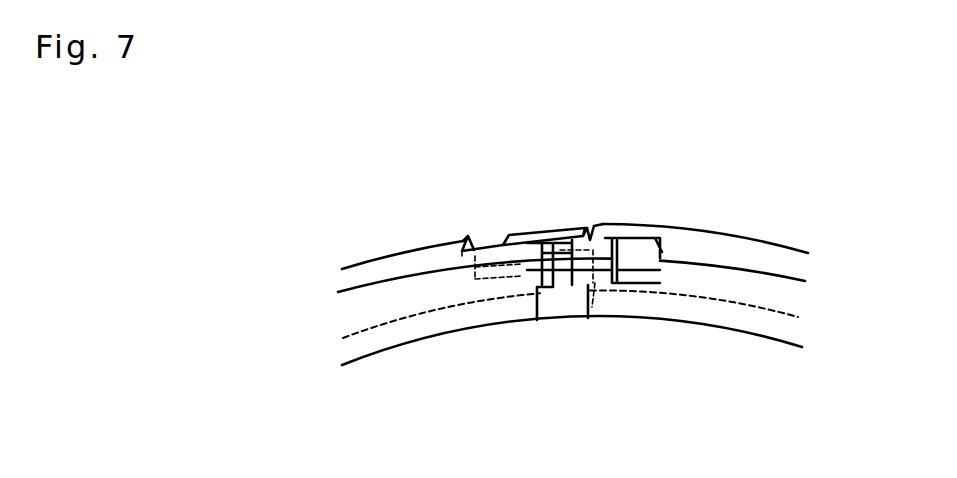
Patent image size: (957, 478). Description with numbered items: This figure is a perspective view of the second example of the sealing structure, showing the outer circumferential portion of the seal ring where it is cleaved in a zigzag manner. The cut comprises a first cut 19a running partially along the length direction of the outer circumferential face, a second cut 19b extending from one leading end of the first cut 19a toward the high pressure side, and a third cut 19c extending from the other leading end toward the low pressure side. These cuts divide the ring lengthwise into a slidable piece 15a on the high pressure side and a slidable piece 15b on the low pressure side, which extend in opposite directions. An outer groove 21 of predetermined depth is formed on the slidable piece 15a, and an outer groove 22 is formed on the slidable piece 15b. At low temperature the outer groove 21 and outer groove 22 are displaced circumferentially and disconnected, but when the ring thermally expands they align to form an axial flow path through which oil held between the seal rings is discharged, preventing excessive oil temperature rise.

The slidable piece 15a is at (527, 250).
The slidable piece 15b is at (548, 237).
The first cut 19a is at (573, 272).
The second cut 19b is at (642, 262).
The third cut 19c is at (483, 243).
The outer groove 21 is at (550, 262).
The outer groove 22 is at (592, 232).